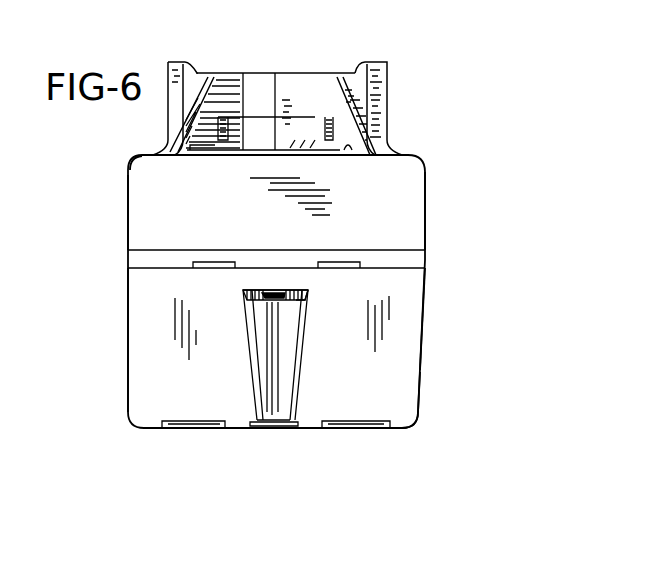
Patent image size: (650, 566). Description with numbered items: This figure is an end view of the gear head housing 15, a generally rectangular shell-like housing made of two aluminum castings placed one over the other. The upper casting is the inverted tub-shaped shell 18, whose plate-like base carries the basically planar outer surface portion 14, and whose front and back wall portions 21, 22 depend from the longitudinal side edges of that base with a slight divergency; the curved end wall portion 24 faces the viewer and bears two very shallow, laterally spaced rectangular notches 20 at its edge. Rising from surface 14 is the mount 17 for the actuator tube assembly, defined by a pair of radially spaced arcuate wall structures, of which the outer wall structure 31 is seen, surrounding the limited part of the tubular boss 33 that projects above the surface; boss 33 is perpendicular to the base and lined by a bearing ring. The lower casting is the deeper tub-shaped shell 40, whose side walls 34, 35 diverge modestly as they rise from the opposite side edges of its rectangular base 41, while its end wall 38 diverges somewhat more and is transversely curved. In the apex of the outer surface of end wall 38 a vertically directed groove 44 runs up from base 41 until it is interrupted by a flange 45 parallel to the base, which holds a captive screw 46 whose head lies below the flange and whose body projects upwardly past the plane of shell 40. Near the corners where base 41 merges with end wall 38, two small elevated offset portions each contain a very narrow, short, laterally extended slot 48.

The surface portion 14 is at (340, 160).
The housing 15 is at (445, 170).
The mount 17 is at (398, 90).
The tub-shaped shell 18 is at (124, 157).
The notches 20 is at (211, 262).
The front wall portion 21 is at (127, 208).
The back wall portion 22 is at (426, 200).
The end wall portion 24 is at (352, 239).
The wall structure 31 is at (327, 82).
The tubular boss 33 is at (247, 157).
The side wall 34 is at (127, 330).
The side wall 35 is at (420, 375).
The end wall 38 is at (357, 397).
The tub-shaped shell 40 is at (428, 346).
The base 41 is at (284, 430).
The groove 44 is at (259, 352).
The flange 45 is at (305, 296).
The captive screw 46 is at (258, 298).
The slot 48 is at (354, 430).